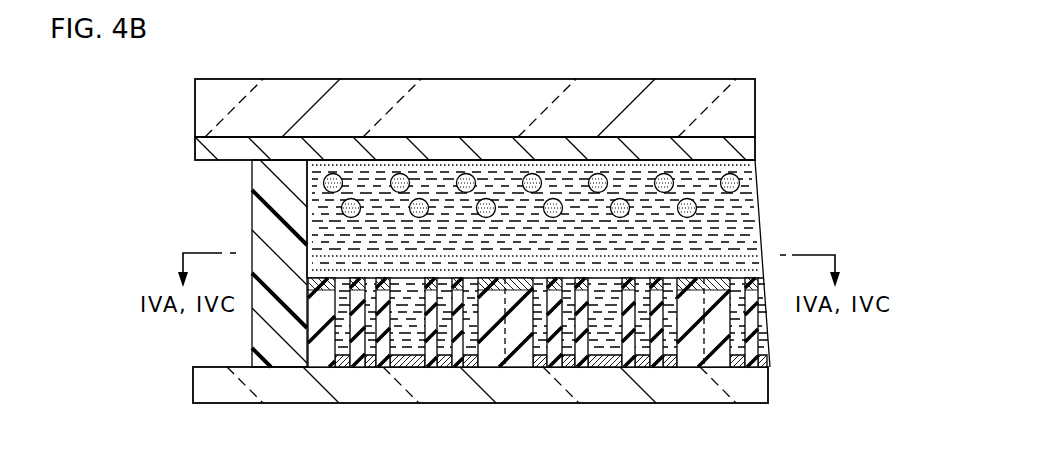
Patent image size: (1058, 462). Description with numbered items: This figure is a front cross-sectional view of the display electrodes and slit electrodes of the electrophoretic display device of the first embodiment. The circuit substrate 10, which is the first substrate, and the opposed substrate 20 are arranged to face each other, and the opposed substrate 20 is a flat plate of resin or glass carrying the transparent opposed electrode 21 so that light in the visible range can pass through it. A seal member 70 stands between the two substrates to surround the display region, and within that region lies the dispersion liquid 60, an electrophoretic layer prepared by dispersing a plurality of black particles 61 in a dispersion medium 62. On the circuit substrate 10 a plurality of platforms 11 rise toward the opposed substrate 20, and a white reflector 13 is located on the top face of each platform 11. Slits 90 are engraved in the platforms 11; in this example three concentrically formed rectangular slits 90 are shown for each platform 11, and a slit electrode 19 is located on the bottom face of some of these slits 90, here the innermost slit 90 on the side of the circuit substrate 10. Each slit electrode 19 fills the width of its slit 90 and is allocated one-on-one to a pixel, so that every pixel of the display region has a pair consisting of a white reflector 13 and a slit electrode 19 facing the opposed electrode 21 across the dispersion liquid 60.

The circuit substrate 10 is at (194, 384).
The platform 11 is at (657, 367).
The white reflector 13 is at (533, 236).
The slit electrode 19 is at (390, 367).
The opposed substrate 20 is at (195, 98).
The opposed electrode 21 is at (195, 146).
The dispersion liquid 60 is at (582, 263).
The black particles 61 is at (745, 182).
The dispersion medium 62 is at (745, 208).
The seal member 70 is at (252, 184).
The slit 90 is at (330, 348).